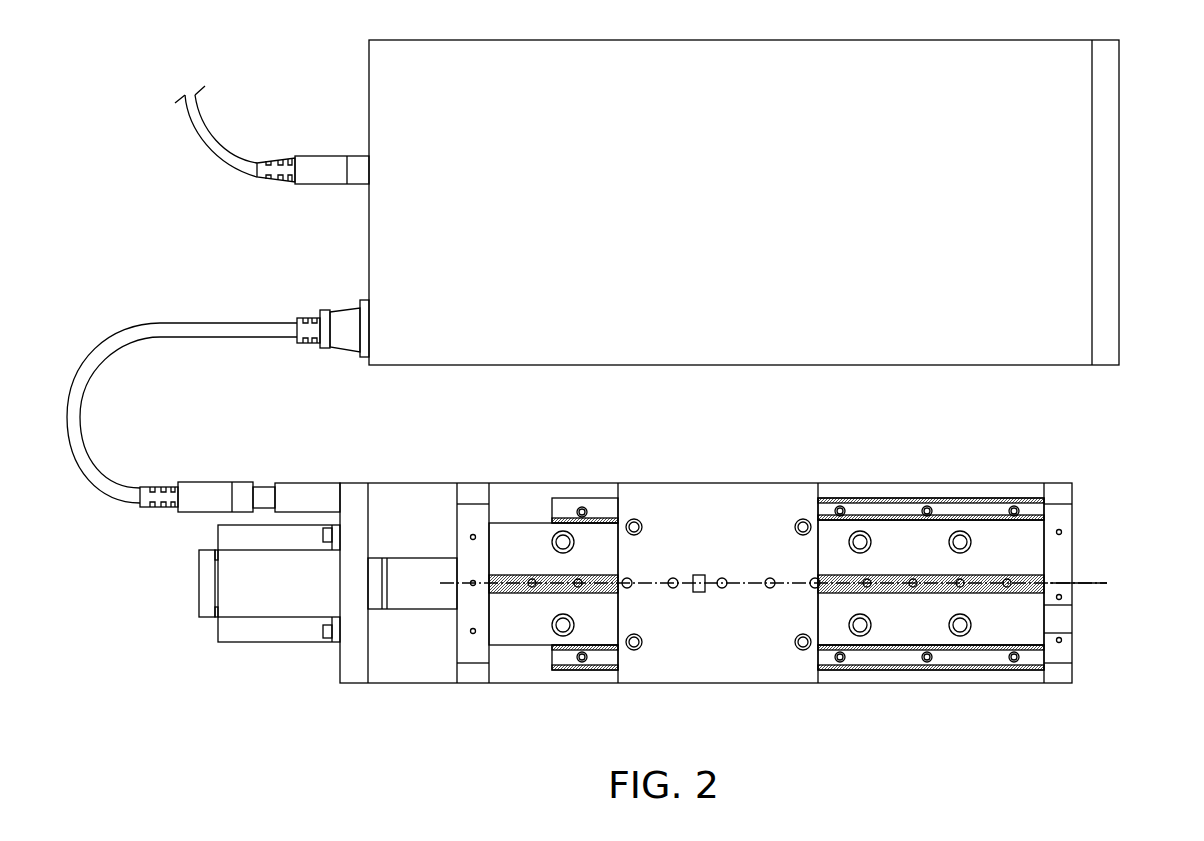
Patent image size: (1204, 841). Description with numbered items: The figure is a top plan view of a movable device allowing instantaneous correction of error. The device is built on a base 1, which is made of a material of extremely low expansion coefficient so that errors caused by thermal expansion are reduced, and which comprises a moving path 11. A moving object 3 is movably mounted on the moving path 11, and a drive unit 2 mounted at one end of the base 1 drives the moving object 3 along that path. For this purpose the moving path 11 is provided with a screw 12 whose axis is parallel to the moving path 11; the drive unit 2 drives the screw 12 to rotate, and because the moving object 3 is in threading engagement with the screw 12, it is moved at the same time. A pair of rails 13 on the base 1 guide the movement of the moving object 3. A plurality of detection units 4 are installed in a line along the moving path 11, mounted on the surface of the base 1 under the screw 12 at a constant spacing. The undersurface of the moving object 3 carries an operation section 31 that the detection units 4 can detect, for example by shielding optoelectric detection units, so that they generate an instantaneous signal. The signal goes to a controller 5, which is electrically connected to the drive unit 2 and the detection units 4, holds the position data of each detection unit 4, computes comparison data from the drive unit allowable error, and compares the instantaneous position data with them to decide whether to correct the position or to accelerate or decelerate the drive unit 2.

The base 1 is at (968, 683).
The moving path 11 is at (1092, 583).
The screw 12 is at (892, 595).
The rails 13 is at (968, 510).
The drive unit 2 is at (277, 598).
The moving object 3 is at (747, 683).
The operation section 31 is at (698, 575).
The detection units 4 is at (722, 578).
The controller 5 is at (1037, 343).